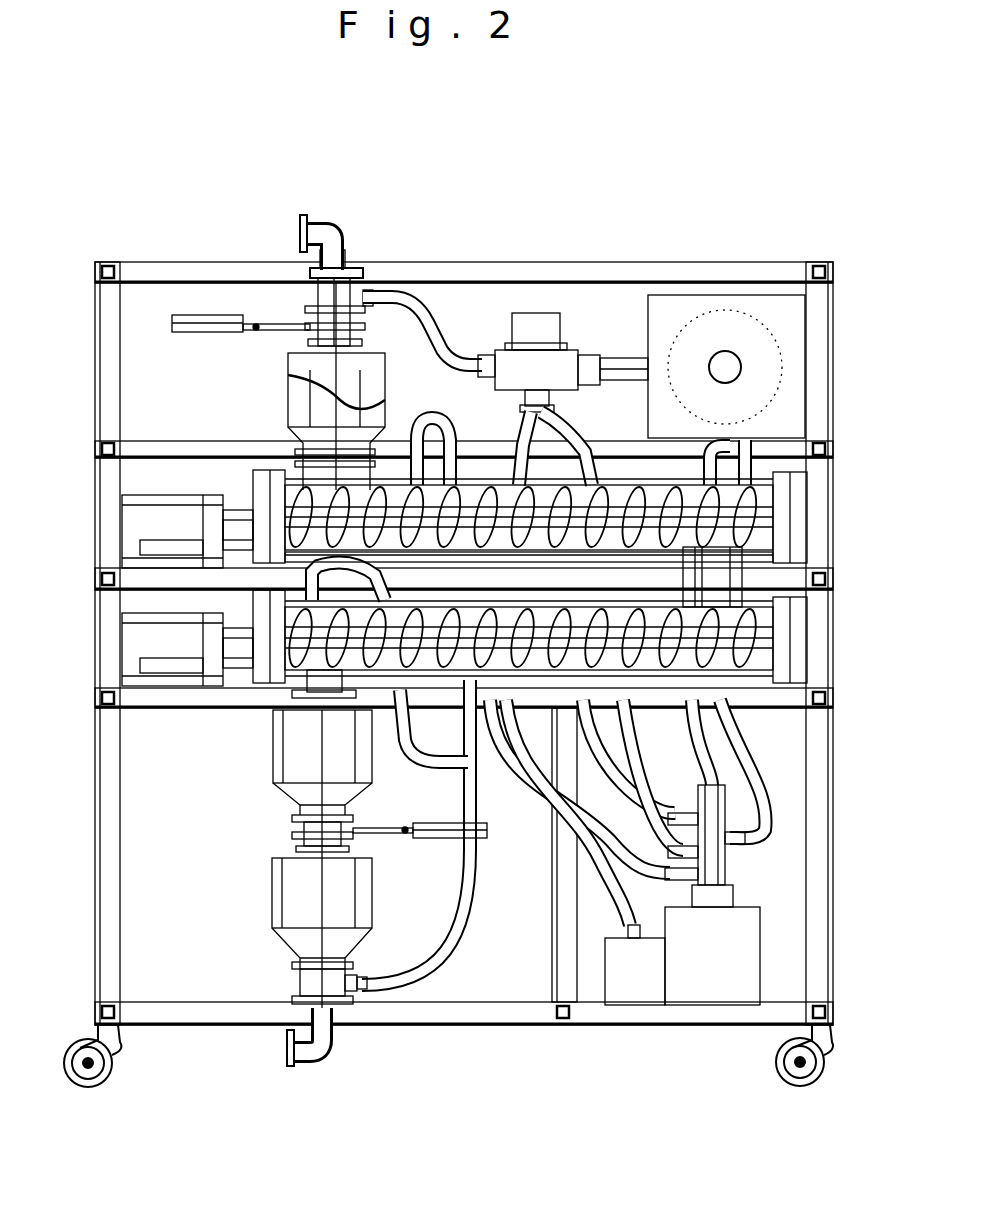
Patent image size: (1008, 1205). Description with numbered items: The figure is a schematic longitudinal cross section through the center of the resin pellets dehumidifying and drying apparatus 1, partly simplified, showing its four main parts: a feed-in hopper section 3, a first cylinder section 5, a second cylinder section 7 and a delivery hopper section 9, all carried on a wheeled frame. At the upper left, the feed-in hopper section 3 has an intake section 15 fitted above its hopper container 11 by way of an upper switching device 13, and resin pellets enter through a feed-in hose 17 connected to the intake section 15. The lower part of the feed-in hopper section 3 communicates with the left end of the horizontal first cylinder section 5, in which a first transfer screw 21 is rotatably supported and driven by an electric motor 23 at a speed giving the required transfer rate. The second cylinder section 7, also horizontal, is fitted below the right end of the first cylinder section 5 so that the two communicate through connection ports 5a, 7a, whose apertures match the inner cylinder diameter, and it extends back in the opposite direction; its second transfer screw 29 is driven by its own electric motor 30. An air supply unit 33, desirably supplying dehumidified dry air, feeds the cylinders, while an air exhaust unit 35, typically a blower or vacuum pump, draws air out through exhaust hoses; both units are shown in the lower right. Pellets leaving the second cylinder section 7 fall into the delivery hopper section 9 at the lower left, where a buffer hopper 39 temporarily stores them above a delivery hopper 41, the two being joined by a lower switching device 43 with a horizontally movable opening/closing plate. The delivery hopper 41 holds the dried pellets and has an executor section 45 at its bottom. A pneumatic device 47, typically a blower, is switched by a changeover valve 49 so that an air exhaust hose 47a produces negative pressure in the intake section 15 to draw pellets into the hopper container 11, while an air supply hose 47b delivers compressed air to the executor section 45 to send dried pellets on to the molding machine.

The dehumidifying and drying apparatus 1 is at (572, 240).
The feed-in hopper section 3 is at (222, 334).
The first cylinder section 5 is at (582, 509).
The connection port 5a is at (740, 560).
The second cylinder section 7 is at (793, 621).
The connection port 7a is at (725, 592).
The delivery hopper section 9 is at (267, 897).
The hopper container 11 is at (315, 410).
The upper switching device 13 is at (240, 322).
The intake section 15 is at (362, 272).
The feed-in hose 17 is at (322, 248).
The first transfer screw 21 is at (665, 510).
The electric motor 23 is at (150, 511).
The second transfer screw 29 is at (822, 702).
The electric motor 30 is at (165, 629).
The air supply unit 33 is at (640, 978).
The air exhaust unit 35 is at (724, 973).
The buffer hopper 39 is at (285, 746).
The delivery hopper 41 is at (310, 913).
The lower switching device 43 is at (413, 836).
The executor section 45 is at (310, 988).
The pneumatic device 47 is at (714, 306).
The air exhaust hose 47a is at (430, 322).
The air supply hose 47b is at (445, 940).
The changeover valve 49 is at (528, 360).